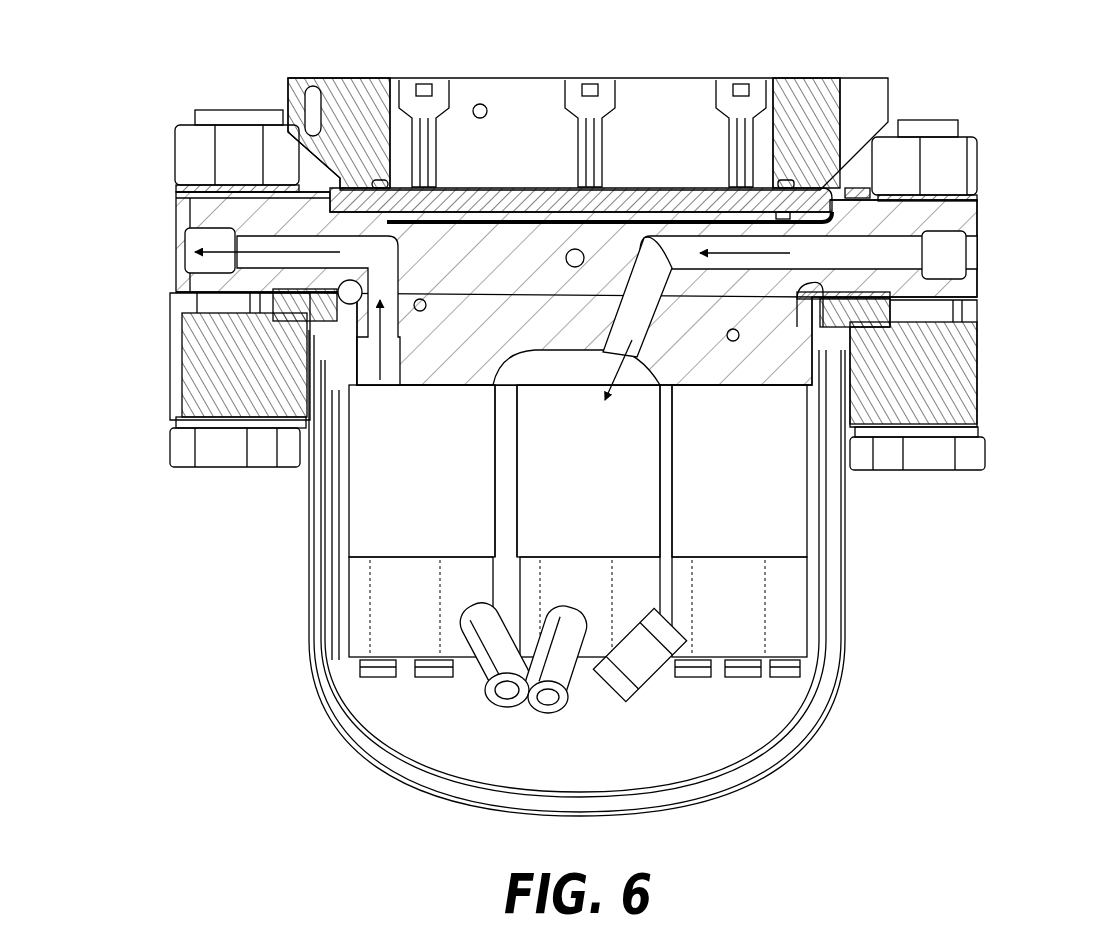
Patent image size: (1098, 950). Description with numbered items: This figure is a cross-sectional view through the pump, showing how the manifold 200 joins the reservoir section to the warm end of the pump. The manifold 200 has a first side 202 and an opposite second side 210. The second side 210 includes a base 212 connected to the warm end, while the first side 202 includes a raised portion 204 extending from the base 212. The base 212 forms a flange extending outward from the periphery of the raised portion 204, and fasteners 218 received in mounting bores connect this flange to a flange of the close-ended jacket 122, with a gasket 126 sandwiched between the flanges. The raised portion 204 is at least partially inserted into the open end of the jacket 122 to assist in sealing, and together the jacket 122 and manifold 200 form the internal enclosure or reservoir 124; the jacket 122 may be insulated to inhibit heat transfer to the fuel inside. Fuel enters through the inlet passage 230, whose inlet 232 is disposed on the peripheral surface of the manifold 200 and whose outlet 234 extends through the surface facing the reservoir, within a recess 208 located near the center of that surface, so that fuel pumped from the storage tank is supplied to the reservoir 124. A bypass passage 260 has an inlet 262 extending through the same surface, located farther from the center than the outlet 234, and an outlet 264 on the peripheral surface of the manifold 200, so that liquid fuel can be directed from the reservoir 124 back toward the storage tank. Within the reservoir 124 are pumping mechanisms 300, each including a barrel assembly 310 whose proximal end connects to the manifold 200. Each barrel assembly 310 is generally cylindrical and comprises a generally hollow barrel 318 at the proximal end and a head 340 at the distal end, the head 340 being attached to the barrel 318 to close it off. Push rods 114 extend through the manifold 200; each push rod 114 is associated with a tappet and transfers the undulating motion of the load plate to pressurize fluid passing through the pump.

The push rod 114 is at (440, 150).
The jacket 122 is at (842, 716).
The reservoir 124 is at (553, 767).
The gasket 126 is at (858, 320).
The manifold 200 is at (988, 288).
The first side 202 is at (740, 390).
The raised portion 204 is at (452, 372).
The recess 208 is at (533, 350).
The second side 210 is at (185, 182).
The base 212 is at (269, 230).
The fastener 218 is at (180, 467).
The inlet passage 230 is at (912, 228).
The inlet 232 is at (985, 252).
The outlet 234 is at (648, 345).
The bypass passage 260 is at (402, 276).
The inlet 262 is at (385, 388).
The outlet 264 is at (182, 238).
The pumping mechanism 300 is at (402, 690).
The barrel assembly 310 is at (343, 542).
The barrel 318 is at (402, 507).
The head 340 is at (395, 602).